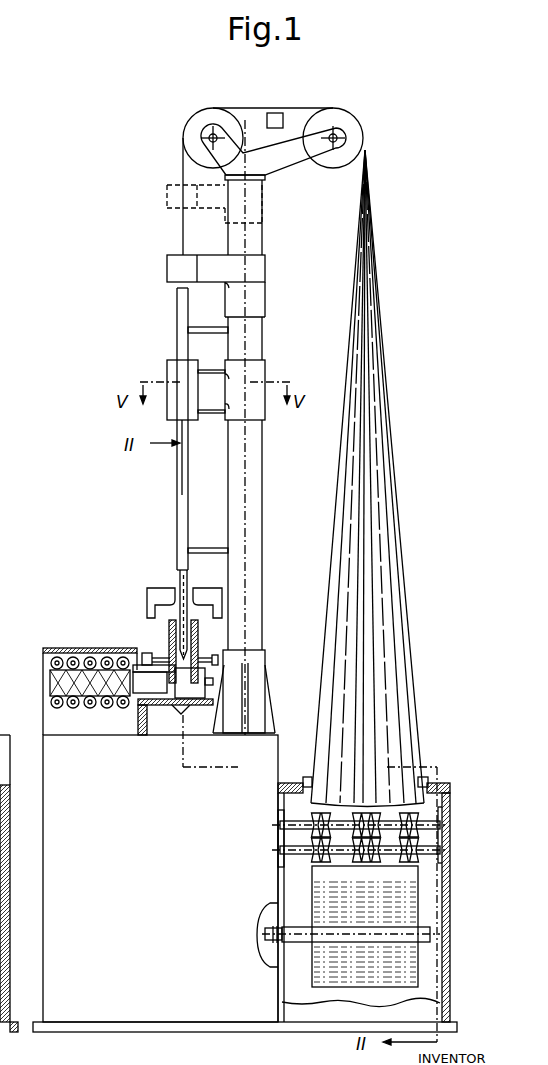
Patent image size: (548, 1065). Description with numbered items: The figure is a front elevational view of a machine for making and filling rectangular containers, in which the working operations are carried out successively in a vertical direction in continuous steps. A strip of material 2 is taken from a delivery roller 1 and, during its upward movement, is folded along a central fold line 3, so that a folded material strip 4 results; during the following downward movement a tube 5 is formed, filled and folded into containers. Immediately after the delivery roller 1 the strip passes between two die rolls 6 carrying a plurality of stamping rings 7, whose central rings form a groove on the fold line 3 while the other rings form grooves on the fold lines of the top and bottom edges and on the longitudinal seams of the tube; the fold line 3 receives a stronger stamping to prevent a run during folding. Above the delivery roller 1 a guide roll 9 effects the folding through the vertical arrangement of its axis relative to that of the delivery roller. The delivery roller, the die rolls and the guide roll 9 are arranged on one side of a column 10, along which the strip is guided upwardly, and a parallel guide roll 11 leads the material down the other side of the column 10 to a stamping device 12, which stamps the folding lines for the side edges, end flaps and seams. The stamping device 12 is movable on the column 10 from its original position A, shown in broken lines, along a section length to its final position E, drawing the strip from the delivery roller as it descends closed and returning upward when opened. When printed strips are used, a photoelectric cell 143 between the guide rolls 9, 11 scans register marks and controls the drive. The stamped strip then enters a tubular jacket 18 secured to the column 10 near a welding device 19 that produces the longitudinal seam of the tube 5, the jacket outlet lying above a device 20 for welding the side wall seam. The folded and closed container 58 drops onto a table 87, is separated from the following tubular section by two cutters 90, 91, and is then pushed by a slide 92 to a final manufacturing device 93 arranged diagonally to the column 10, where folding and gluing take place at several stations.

The delivery roller 1 is at (314, 971).
The strip of material 2 is at (390, 719).
The central fold line 3 is at (365, 683).
The folded material strip 4 is at (180, 233).
The tube 5 is at (179, 576).
The die rolls 6 is at (307, 847).
The stamping rings 7 is at (401, 813).
The guide roll 9 is at (347, 112).
The column 10 is at (264, 468).
The guide roll 11 is at (205, 112).
The stamping device 12 is at (162, 196).
The tubular jacket 18 is at (176, 312).
The welding device 19 is at (168, 368).
The device for welding the side wall seam 20 is at (147, 601).
The container 58 is at (176, 700).
The table 87 is at (212, 703).
The cutter 90 is at (203, 656).
The cutter 91 is at (167, 660).
The slide 92 is at (199, 698).
The final manufacturing device 93 is at (51, 663).
The photoelectric cell 143 is at (273, 113).
The original position A is at (256, 217).
The final position E is at (254, 294).